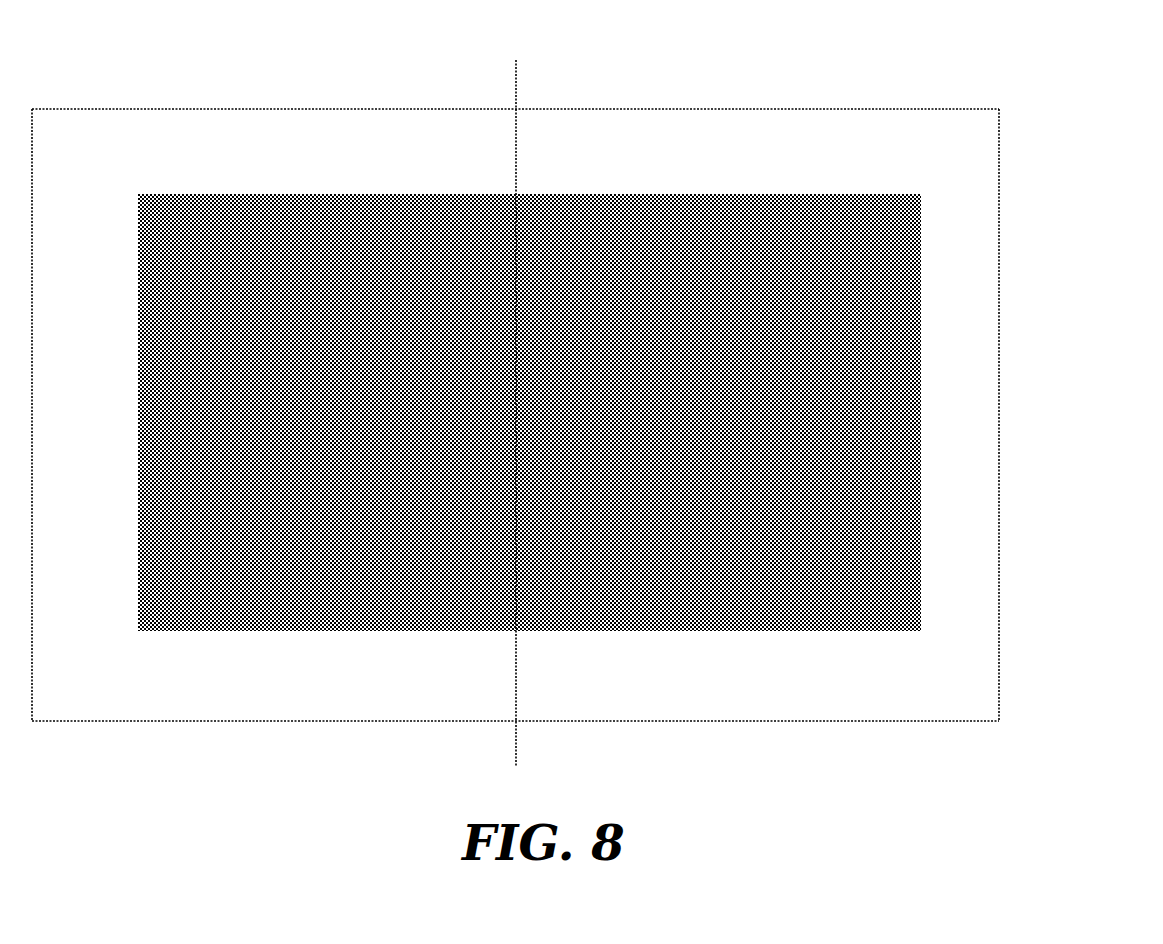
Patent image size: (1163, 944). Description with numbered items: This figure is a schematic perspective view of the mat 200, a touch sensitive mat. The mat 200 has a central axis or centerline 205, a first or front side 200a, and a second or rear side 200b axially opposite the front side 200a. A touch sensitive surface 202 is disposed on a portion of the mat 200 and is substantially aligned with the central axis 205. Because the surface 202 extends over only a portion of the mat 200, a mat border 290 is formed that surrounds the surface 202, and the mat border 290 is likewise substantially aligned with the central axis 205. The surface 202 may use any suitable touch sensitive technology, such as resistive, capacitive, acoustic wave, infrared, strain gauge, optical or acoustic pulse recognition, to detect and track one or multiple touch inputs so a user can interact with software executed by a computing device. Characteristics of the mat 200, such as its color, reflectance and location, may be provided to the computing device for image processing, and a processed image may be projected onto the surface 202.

The mat 200 is at (557, 410).
The front side 200a is at (670, 722).
The rear side 200b is at (230, 108).
The touch sensitive surface 202 is at (150, 392).
The central axis 205 is at (515, 102).
The mat border 290 is at (999, 344).